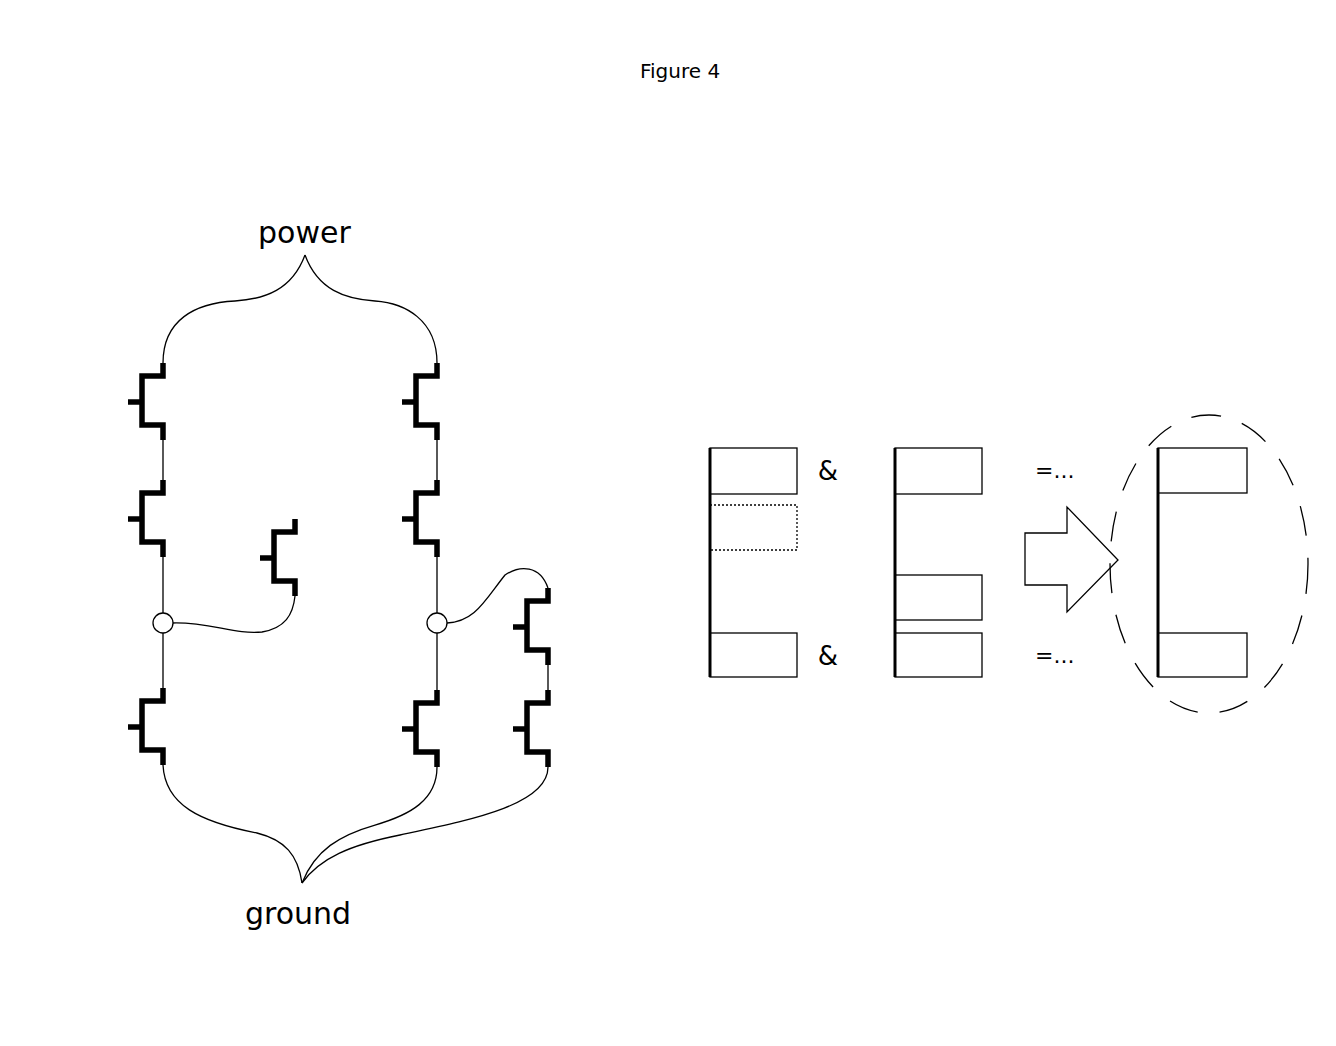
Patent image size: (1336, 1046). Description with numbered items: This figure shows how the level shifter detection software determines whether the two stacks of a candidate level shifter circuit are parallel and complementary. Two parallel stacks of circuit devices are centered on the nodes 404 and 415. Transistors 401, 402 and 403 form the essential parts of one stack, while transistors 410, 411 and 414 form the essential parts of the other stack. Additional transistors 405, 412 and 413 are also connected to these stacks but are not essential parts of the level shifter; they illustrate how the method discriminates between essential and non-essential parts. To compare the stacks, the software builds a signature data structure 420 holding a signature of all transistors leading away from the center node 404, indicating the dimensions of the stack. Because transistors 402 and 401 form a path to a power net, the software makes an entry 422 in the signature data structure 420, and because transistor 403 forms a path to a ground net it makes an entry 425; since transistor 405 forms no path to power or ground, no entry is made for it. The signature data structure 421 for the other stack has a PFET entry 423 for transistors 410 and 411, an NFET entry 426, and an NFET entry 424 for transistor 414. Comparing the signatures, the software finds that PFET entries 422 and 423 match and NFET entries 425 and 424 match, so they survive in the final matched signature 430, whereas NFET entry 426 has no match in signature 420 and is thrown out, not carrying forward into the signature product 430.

The transistor 401 is at (126, 400).
The transistor 402 is at (124, 520).
The transistor 403 is at (122, 728).
The node 404 is at (152, 623).
The additional transistor 405 is at (294, 517).
The transistor 410 is at (448, 372).
The transistor 411 is at (446, 494).
The additional transistor 412 is at (562, 580).
The additional transistor 413 is at (565, 698).
The transistor 414 is at (392, 729).
The node 415 is at (427, 622).
The signature data structure 420 is at (708, 562).
The signature data structure 421 is at (893, 564).
The entry 422 is at (754, 447).
The PFET entry 423 is at (940, 447).
The NFET entry 424 is at (938, 679).
The entry 425 is at (753, 679).
The NFET entry 426 is at (940, 574).
The signature 430 is at (1221, 416).